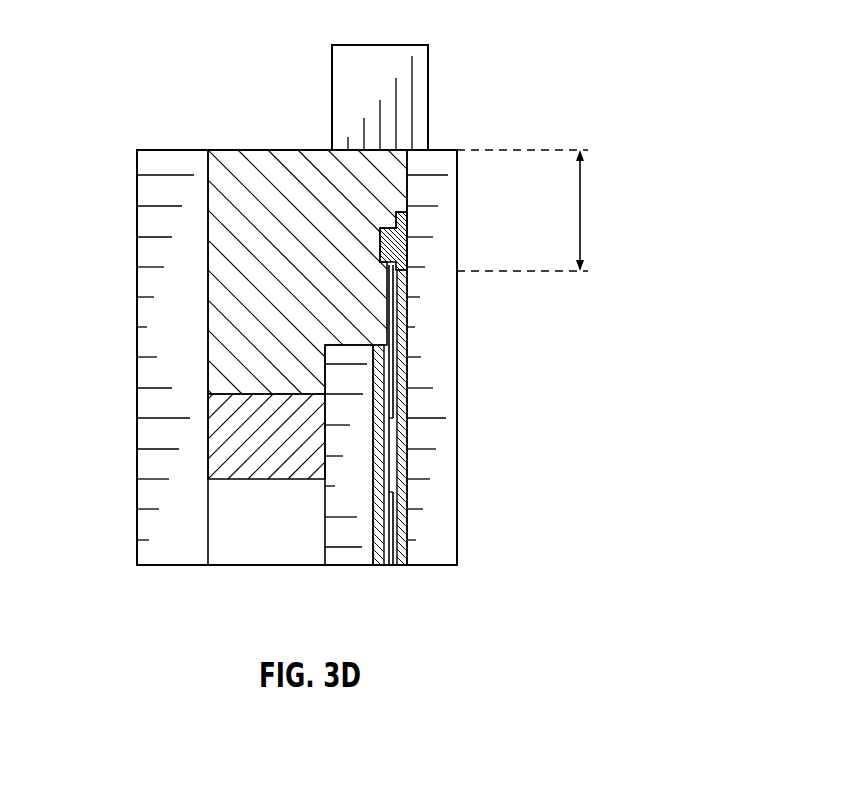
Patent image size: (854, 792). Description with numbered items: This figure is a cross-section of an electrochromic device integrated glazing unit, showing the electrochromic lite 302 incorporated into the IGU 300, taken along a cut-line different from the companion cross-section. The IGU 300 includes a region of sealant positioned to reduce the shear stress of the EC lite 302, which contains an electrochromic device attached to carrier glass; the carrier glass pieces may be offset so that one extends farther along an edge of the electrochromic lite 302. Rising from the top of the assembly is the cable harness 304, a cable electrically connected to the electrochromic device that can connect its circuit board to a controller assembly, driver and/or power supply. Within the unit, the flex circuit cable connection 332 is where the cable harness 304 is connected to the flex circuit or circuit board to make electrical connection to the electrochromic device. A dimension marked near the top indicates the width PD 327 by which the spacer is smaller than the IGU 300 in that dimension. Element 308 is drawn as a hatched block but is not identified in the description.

The IGU 300 is at (134, 44).
The cable harness 304 is at (430, 106).
The insulating block 308 is at (284, 480).
The EC lite 302 is at (325, 578).
The flex circuit cable connection 332 is at (386, 237).
The width PD 327 is at (583, 211).